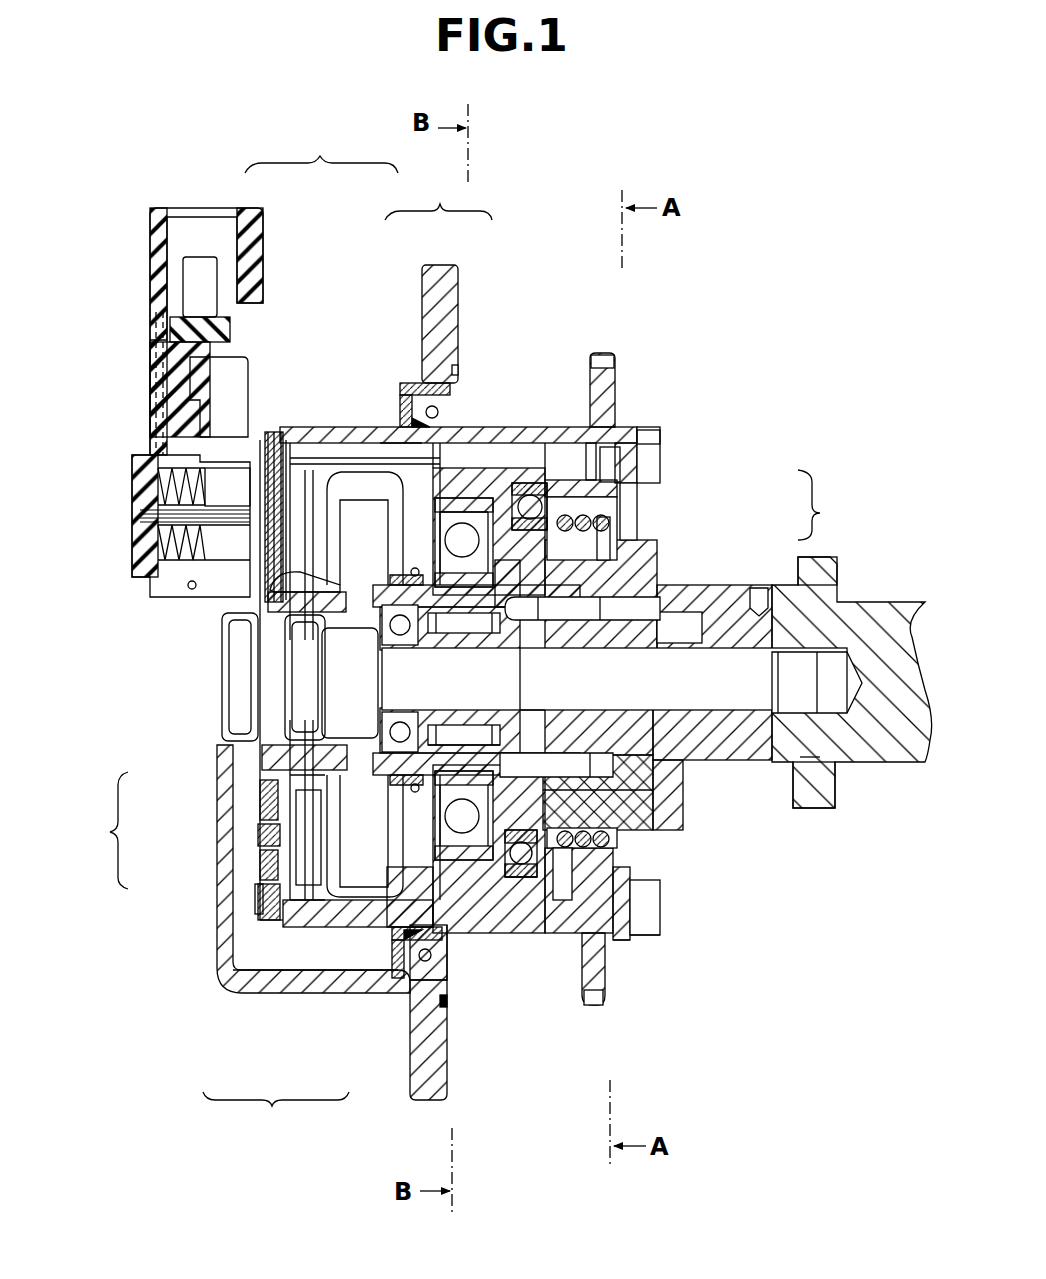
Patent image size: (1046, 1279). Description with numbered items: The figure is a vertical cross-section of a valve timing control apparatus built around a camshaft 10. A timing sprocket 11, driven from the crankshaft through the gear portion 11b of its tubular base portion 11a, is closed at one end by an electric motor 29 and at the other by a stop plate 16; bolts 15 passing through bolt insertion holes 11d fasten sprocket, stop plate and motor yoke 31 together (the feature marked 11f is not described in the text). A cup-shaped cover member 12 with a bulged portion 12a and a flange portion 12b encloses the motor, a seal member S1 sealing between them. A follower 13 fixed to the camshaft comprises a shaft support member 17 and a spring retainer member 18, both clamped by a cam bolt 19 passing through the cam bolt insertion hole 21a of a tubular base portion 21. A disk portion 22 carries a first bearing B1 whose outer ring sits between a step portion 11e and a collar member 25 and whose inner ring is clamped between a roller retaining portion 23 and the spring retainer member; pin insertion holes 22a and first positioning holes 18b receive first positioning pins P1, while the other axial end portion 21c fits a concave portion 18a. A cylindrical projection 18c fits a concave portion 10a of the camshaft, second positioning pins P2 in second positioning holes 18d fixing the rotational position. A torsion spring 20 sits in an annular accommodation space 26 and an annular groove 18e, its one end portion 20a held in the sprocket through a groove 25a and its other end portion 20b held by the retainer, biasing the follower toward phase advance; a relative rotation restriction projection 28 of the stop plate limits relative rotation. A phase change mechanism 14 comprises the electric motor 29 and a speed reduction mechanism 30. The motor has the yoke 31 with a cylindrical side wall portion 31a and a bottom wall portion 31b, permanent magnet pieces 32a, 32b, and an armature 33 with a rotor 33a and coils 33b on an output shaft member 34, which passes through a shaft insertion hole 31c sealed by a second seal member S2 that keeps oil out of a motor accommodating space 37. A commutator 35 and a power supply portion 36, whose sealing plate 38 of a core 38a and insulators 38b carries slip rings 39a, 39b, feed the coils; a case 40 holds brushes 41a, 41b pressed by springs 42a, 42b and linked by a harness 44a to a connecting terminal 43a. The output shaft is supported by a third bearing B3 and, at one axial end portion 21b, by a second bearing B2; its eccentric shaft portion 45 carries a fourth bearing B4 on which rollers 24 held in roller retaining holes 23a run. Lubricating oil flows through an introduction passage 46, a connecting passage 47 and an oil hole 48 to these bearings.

The camshaft 10 is at (875, 612).
The cylindrical concave portion 10a is at (812, 570).
The timing sprocket 11 is at (630, 390).
The tubular base portion 11a is at (497, 910).
The gear portion 11b is at (607, 960).
The bolt insertion holes 11d is at (590, 515).
The inner peripheral-side step portion 11e is at (572, 452).
The housing notch 11f is at (453, 880).
The cover member 12 is at (197, 977).
The cylindrical bulged portion 12a is at (293, 983).
The flange portion 12b is at (433, 1073).
The follower 13 is at (823, 505).
The phase change mechanism 14 is at (276, 1114).
The bolts 15 is at (655, 478).
The stop plate 16 is at (655, 935).
The shaft support member 17 is at (660, 540).
The spring retainer member 18 is at (682, 556).
The cylindrical concave portion 18a is at (650, 778).
The first positioning holes 18b is at (627, 822).
The cylindrical projection 18c is at (697, 647).
The second positioning holes 18d is at (785, 792).
The annular groove 18e is at (610, 453).
The cam bolt 19 is at (306, 683).
The torsion spring 20 is at (637, 905).
The one end portion 20a is at (565, 900).
The other end portion 20b is at (600, 487).
The tubular base portion 21 is at (535, 717).
The cam bolt insertion hole 21a is at (533, 713).
The one axial end portion 21b is at (432, 637).
The other axial end portion 21c is at (620, 637).
The disk portion 22 is at (530, 540).
The pin insertion holes 22a is at (605, 845).
The roller retaining portion 23 is at (472, 585).
The roller retaining holes 23a is at (455, 855).
The rollers 24 is at (408, 975).
The collar member 25 is at (653, 457).
The groove 25a is at (593, 1000).
The annular accommodation space 26 is at (634, 950).
The relative rotation restriction projection 28 is at (600, 543).
The electric motor 29 is at (280, 940).
The speed reduction mechanism 30 is at (420, 875).
The yoke 31 is at (438, 197).
The cylindrical side wall portion 31a is at (380, 440).
The bottom wall portion 31b is at (430, 430).
The shaft insertion hole 31c is at (373, 783).
The permanent magnet piece 32a is at (327, 450).
The permanent magnet piece 32b is at (313, 950).
The armature 33 is at (103, 830).
The rotor 33a is at (262, 803).
The coils 33b is at (262, 856).
The output shaft member 34 is at (270, 752).
The commutator 35 is at (273, 594).
The power supply portion 36 is at (258, 412).
The motor accommodating space 37 is at (262, 895).
The sealing plate 38 is at (321, 524).
The core 38a is at (280, 450).
The resin insulators 38b is at (270, 450).
The slip ring 39a is at (258, 830).
The slip ring 39b is at (258, 890).
The case 40 is at (152, 262).
The first brush 41a is at (157, 583).
The second brush 41b is at (222, 485).
The spring 42a is at (217, 545).
The spring 42b is at (157, 487).
The connecting terminal 43a is at (203, 272).
The harness 44a is at (160, 398).
The eccentric shaft portion 45 is at (462, 760).
The introduction passage 46 is at (735, 620).
The connecting passage 47 is at (755, 600).
The oil hole 48 is at (570, 620).
The seal member S1 is at (452, 420).
The second seal member S2 is at (395, 588).
The first bearing B1 is at (530, 887).
The second bearing B2 is at (463, 720).
The third bearing B3 is at (400, 706).
The fourth bearing B4 is at (462, 505).
The first positioning pins P1 is at (595, 848).
The second positioning pins P2 is at (800, 757).